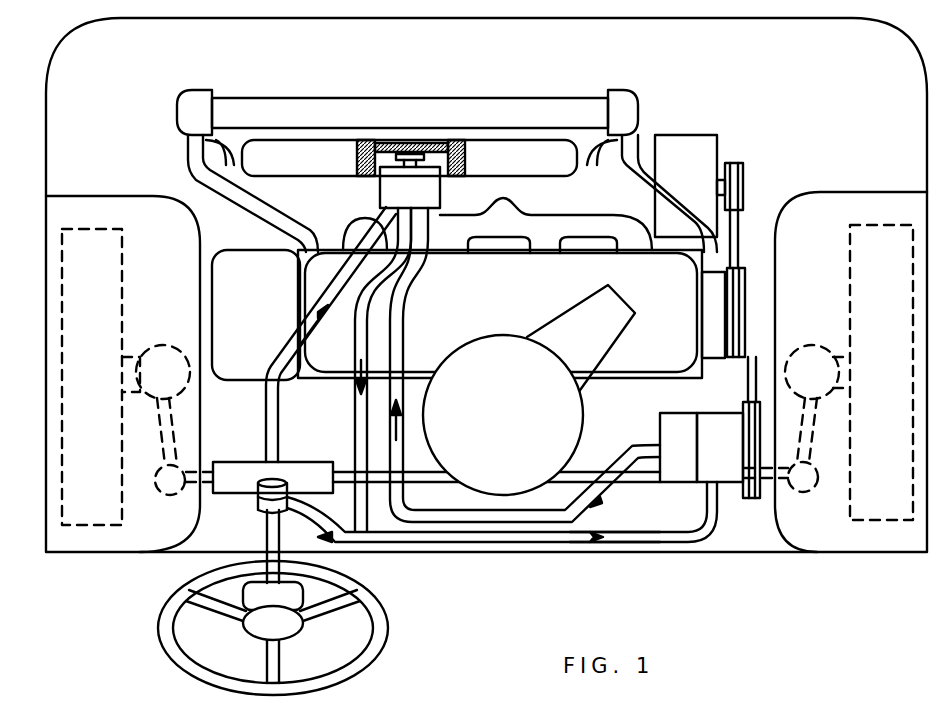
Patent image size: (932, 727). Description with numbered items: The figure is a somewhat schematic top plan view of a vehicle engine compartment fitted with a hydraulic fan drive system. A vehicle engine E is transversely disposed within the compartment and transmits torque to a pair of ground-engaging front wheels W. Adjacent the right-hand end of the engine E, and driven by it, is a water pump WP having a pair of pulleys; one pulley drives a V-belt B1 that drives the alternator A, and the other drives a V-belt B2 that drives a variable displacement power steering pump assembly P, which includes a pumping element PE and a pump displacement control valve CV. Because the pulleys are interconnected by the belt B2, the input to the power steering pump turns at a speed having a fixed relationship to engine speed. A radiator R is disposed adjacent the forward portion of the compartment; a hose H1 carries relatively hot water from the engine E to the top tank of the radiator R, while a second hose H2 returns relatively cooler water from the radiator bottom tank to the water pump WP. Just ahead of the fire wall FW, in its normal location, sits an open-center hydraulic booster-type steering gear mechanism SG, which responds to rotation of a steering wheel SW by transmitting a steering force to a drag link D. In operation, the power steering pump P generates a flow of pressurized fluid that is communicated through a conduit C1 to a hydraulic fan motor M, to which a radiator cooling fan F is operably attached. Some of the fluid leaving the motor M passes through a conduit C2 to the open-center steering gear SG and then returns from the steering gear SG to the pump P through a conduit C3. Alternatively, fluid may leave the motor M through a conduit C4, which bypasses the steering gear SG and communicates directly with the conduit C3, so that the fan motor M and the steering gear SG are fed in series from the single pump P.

The radiator R is at (392, 108).
The radiator cooling fan F is at (525, 160).
The hydraulic fan motor M is at (385, 190).
The hose H1 is at (238, 198).
The second hose H2 is at (642, 172).
The alternator A is at (688, 156).
The drive belt B1 is at (738, 228).
The V-belt B2 is at (752, 372).
The front wheels W is at (85, 300).
The vehicle engine E is at (457, 295).
The water pump WP is at (715, 318).
The conduit C1 is at (396, 355).
The conduit C2 is at (280, 348).
The conduit C3 is at (460, 548).
The conduit C4 is at (362, 436).
The steering gear mechanism SG is at (244, 480).
The steering wheel SW is at (168, 623).
The pump displacement control valve CV is at (676, 432).
The pumping element PE is at (718, 432).
The drag link D is at (597, 482).
The power steering pump assembly P is at (678, 491).
The fire wall FW is at (597, 548).